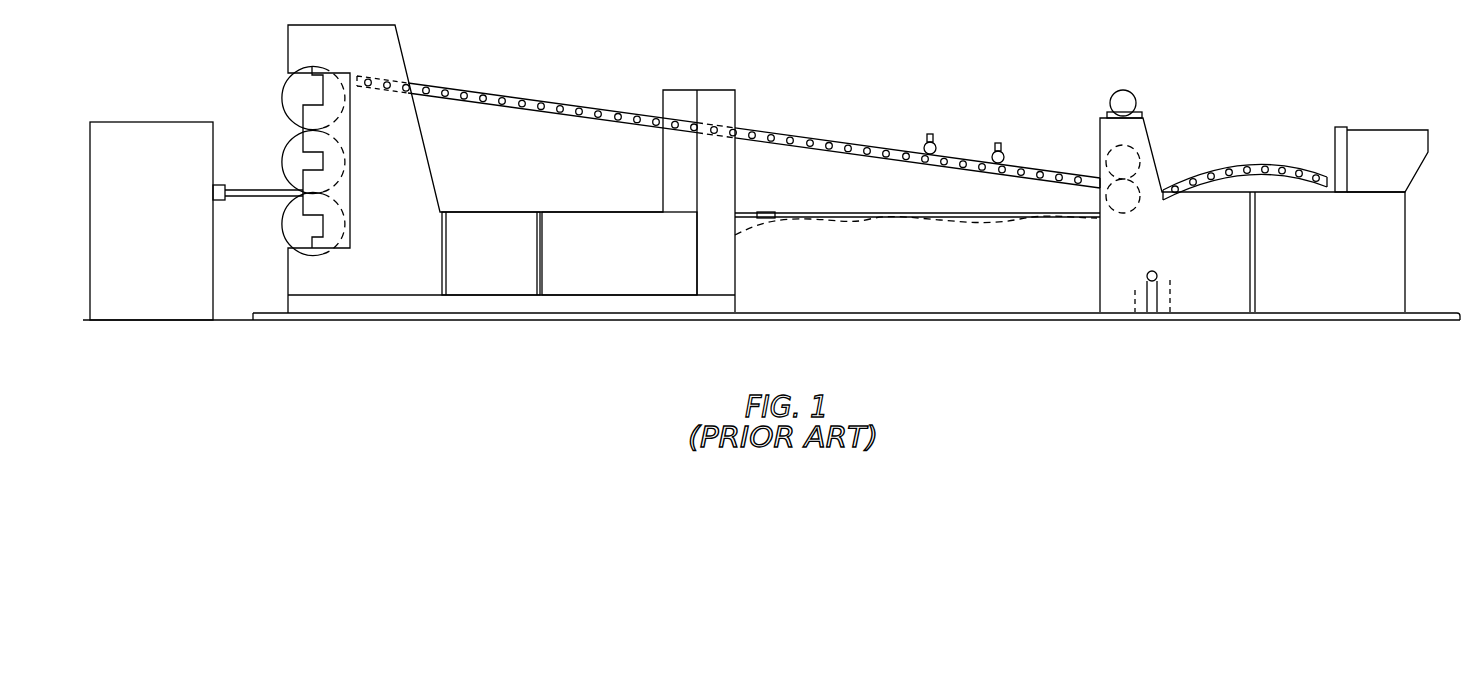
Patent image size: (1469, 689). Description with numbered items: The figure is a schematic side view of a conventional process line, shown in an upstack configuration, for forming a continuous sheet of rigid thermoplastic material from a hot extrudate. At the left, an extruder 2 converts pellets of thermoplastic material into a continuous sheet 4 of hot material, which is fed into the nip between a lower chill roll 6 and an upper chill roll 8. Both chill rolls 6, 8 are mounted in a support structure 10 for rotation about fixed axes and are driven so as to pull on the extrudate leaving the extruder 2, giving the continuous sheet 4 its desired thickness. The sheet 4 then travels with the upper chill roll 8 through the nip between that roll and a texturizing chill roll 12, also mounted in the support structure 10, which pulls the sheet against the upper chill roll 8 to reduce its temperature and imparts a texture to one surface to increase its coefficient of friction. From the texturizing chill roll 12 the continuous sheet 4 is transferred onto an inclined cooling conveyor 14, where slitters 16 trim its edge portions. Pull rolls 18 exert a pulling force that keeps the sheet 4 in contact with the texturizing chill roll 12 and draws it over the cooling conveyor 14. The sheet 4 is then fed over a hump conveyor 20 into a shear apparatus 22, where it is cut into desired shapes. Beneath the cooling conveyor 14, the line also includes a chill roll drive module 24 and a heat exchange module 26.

The extruder 2 is at (156, 282).
The continuous sheet 4 is at (246, 198).
The lower chill roll 6 is at (286, 244).
The upper chill roll 8 is at (286, 158).
The support structure 10 is at (404, 255).
The texturizing chill roll 12 is at (286, 90).
The cooling conveyor 14 is at (487, 92).
The slitters 16 is at (1005, 150).
The pull rolls 18 is at (1150, 160).
The hump conveyor 20 is at (1266, 166).
The shear apparatus 22 is at (1396, 160).
The chill roll drive module 24 is at (506, 256).
The heat exchange module 26 is at (631, 255).